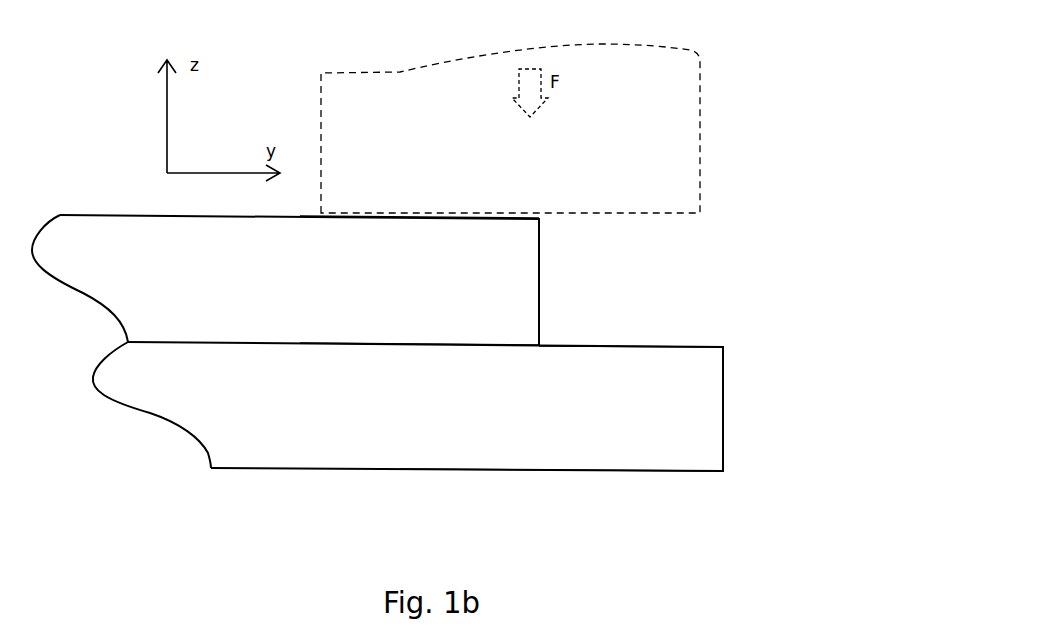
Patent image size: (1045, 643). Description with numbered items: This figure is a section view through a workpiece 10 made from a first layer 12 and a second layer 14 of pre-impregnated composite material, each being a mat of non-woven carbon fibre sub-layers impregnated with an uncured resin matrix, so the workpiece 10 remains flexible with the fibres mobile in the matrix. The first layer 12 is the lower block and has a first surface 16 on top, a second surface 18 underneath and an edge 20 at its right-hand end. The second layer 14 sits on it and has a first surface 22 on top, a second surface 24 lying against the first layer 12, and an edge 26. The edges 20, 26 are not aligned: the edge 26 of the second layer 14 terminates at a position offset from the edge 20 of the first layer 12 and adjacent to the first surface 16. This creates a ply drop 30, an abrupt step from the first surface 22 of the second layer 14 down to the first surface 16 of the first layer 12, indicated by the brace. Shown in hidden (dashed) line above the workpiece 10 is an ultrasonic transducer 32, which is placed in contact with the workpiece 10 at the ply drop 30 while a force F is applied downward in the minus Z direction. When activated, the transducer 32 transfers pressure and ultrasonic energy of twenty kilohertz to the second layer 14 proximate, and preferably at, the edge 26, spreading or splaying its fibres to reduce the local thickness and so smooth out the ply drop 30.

The workpiece 10 is at (741, 188).
The first layer 12 is at (330, 427).
The second layer 14 is at (330, 295).
The first surface 16 is at (686, 345).
The second surface 18 is at (598, 470).
The edge 20 is at (723, 405).
The first surface 22 is at (425, 214).
The second surface 24 is at (493, 345).
The edge 26 is at (539, 280).
The ply drop 30 is at (563, 220).
The ultrasonic transducer 32 is at (702, 113).